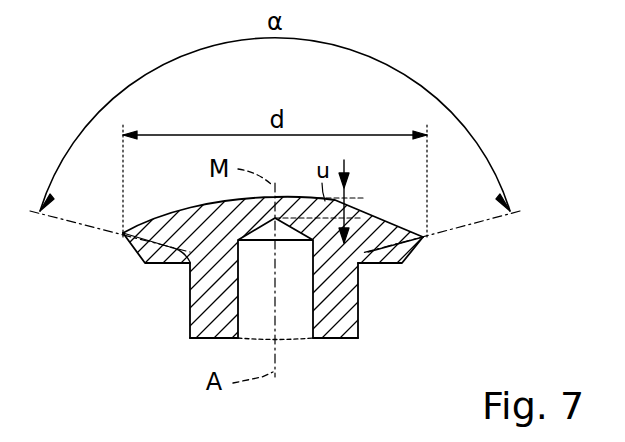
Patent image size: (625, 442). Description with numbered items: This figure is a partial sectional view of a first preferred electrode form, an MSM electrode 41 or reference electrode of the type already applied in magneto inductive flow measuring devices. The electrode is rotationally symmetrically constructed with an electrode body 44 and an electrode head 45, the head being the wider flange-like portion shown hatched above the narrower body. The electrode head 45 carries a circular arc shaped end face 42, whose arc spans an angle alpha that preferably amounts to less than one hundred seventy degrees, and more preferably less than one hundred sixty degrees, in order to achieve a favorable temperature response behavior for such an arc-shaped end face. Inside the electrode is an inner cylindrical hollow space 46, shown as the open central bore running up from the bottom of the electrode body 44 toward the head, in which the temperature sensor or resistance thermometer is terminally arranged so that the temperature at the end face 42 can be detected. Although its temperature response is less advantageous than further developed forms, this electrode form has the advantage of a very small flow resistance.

The MSM electrode 41 is at (372, 302).
The circular arc shaped end face 42 is at (389, 216).
The electrode body 44 is at (191, 318).
The electrode head 45 is at (158, 232).
The inner cylindrical hollow space 46 is at (298, 322).